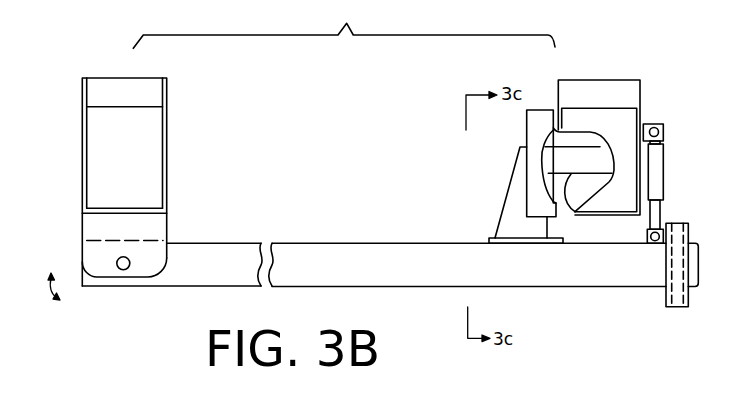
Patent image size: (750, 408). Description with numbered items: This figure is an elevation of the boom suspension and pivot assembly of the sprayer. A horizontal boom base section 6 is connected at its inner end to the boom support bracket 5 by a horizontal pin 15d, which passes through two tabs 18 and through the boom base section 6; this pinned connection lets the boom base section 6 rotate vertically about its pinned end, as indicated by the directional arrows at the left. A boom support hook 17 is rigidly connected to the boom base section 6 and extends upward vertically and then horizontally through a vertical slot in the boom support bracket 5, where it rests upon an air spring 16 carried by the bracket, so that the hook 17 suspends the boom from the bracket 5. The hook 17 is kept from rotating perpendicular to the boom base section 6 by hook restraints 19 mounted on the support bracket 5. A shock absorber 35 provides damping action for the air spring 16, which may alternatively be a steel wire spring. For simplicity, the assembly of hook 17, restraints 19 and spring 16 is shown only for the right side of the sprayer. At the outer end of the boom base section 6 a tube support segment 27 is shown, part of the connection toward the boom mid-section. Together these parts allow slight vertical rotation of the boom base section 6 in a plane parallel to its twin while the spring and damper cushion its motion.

The boom support bracket 5 is at (124, 176).
The boom base section 6 is at (458, 274).
The horizontal pin 15d is at (124, 270).
The air spring 16 is at (589, 202).
The boom support hook 17 is at (522, 230).
The tabs 18 is at (167, 231).
The hook restraints 19 is at (543, 125).
The tube support segments 27 is at (688, 223).
The shock absorber 35 is at (663, 167).